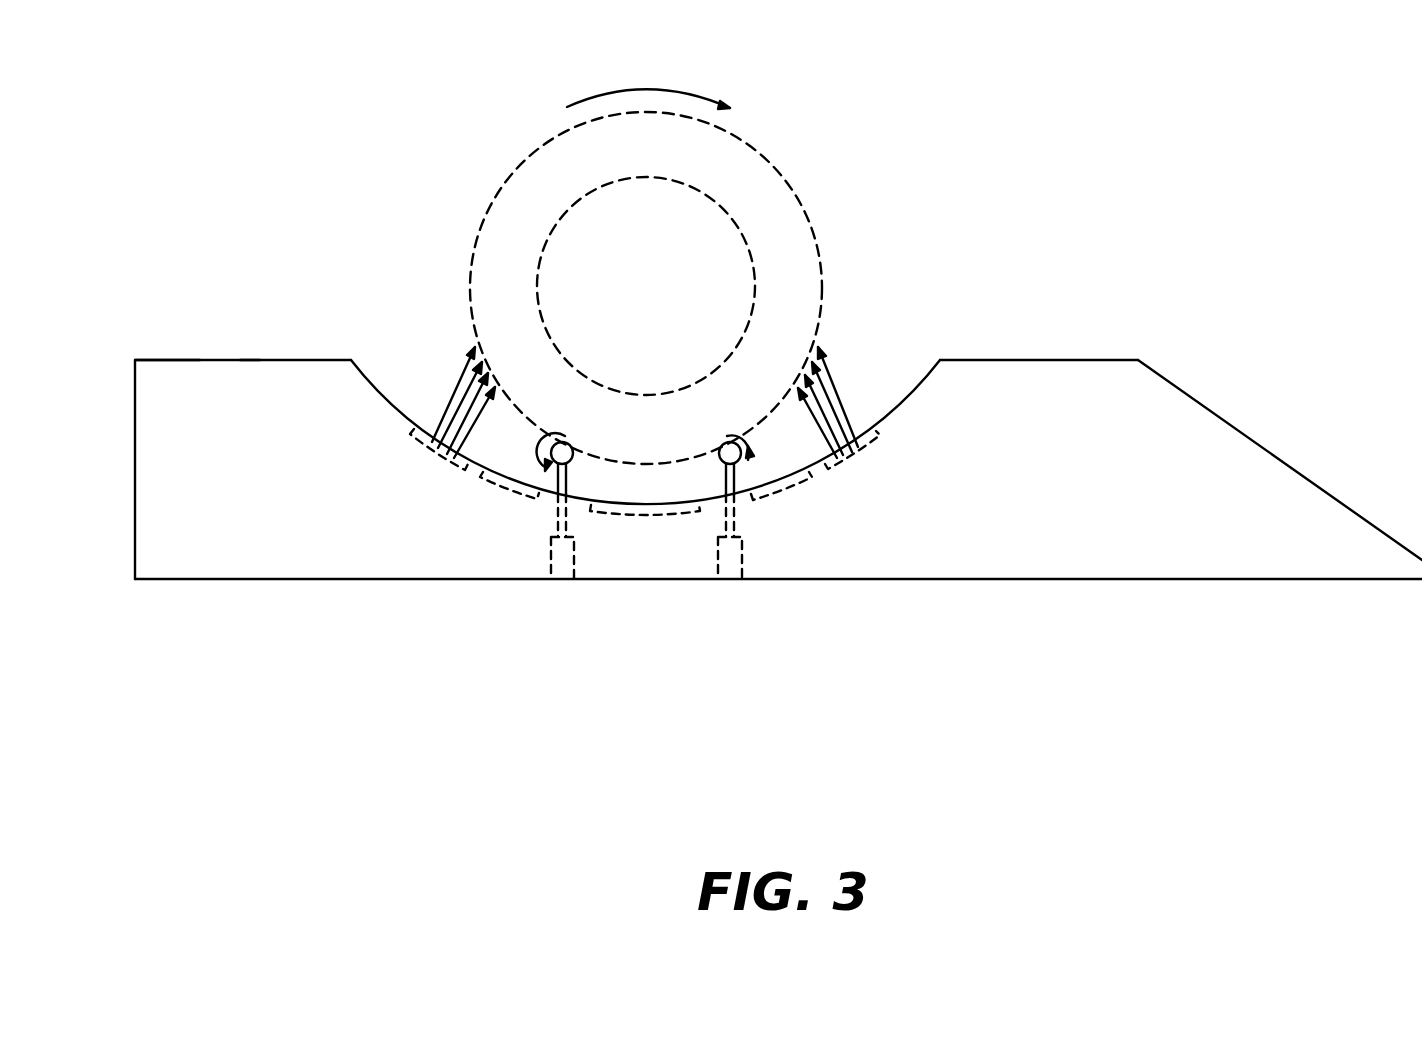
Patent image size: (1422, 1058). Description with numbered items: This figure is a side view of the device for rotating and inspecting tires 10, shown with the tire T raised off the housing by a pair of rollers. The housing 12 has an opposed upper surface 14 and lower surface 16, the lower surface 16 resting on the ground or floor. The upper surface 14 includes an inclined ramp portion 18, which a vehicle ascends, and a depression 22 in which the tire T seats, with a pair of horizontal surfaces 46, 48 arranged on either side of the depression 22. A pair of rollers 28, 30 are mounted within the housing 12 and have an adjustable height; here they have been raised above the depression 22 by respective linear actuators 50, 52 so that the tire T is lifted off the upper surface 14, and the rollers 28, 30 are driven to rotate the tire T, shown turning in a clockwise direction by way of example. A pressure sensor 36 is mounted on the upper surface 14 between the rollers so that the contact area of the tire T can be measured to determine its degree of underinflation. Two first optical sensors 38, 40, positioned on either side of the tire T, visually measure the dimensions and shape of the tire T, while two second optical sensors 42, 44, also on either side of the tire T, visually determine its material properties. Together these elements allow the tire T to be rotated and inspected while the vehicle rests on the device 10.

The device for rotating and inspecting tires 10 is at (1036, 290).
The housing 12 is at (168, 444).
The upper surface 14 is at (268, 360).
The lower surface 16 is at (344, 579).
The inclined ramp portion 18 is at (1285, 464).
The depression 22 is at (468, 480).
The roller 28 is at (574, 452).
The roller 30 is at (720, 452).
The pressure sensor 36 is at (618, 512).
The first optical sensor 38 is at (500, 490).
The first optical sensor 40 is at (765, 495).
The second optical sensor 42 is at (451, 462).
The second optical sensor 44 is at (857, 455).
The horizontal surface 46 is at (178, 360).
The horizontal surface 48 is at (1073, 361).
The linear actuator 50 is at (565, 580).
The linear actuator 52 is at (725, 580).
The tire T is at (737, 137).